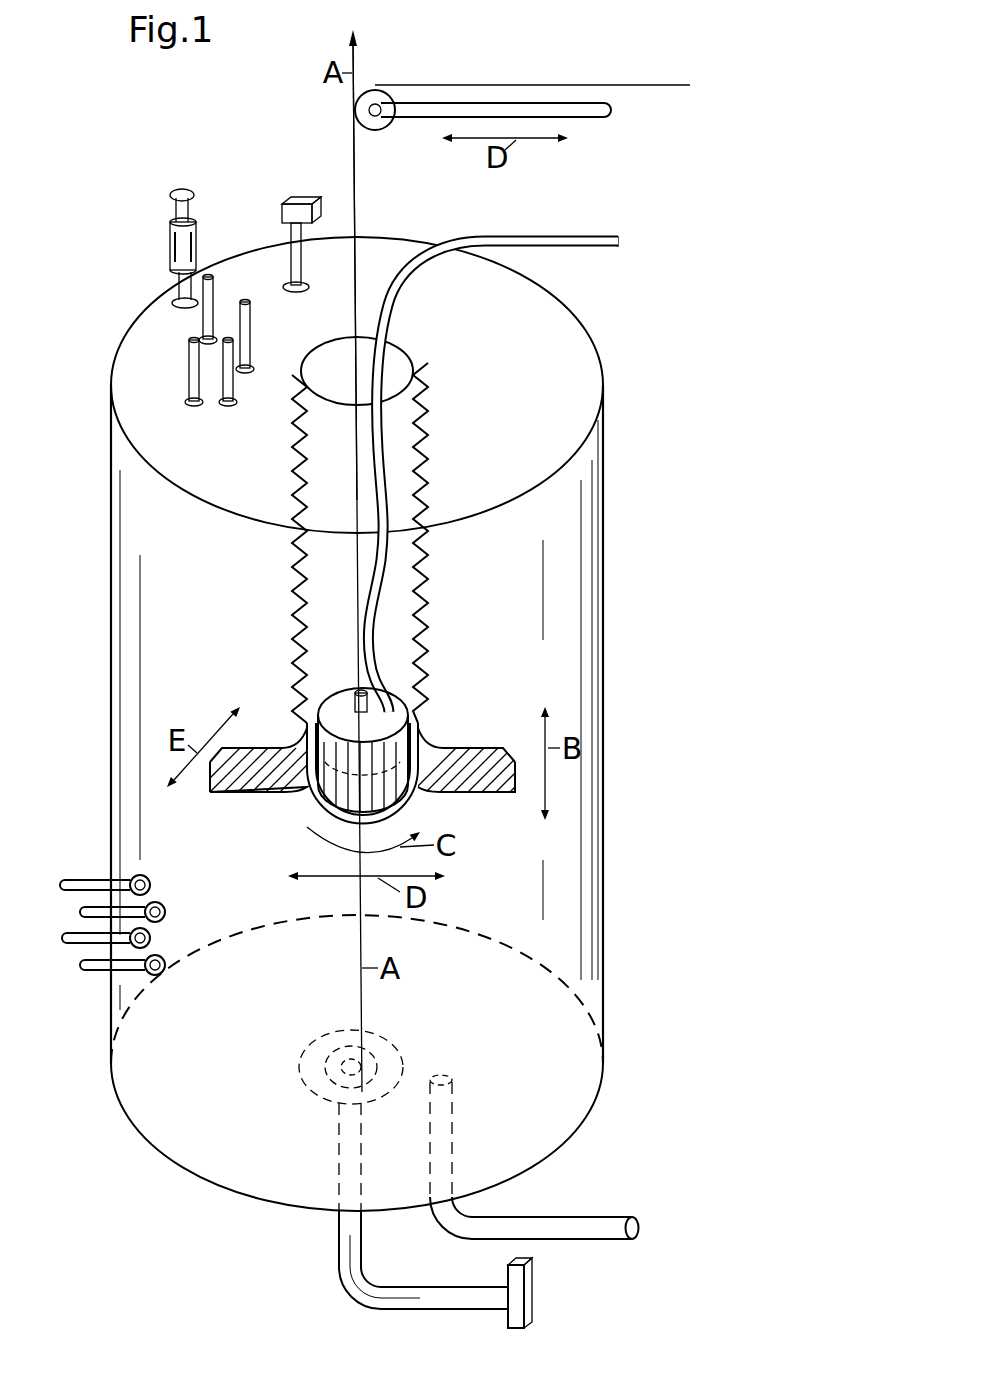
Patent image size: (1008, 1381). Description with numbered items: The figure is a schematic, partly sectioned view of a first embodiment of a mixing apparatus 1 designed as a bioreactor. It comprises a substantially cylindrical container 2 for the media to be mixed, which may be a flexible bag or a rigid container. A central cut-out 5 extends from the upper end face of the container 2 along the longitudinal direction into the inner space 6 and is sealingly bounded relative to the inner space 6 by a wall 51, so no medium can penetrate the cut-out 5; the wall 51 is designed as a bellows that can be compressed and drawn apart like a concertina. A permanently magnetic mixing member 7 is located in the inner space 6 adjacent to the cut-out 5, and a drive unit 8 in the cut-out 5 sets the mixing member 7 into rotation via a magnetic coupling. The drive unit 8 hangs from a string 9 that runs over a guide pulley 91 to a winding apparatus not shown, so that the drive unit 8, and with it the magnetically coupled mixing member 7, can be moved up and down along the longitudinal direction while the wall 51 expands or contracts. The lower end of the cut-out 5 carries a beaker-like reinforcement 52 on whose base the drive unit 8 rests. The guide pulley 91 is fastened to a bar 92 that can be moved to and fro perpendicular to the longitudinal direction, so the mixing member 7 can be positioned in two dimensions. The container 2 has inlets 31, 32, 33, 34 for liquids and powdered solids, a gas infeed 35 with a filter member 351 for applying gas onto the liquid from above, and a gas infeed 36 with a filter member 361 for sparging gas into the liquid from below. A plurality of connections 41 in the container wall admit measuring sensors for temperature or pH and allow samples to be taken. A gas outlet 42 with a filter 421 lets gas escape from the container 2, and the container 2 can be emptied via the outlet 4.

The mixing apparatus 1 is at (126, 147).
The container 2 is at (102, 656).
The outlet 4 is at (600, 1218).
The central cut-out 5 is at (386, 365).
The inner space 6 is at (200, 648).
The mixing member 7 is at (470, 752).
The drive unit 8 is at (397, 720).
The string 9 is at (357, 207).
The inlet 31 is at (190, 386).
The inlet 32 is at (228, 407).
The inlet 33 is at (250, 347).
The inlet 34 is at (206, 318).
The gas infeed 35 is at (290, 234).
The filter member 351 is at (300, 199).
The gas infeed 36 is at (425, 1302).
The filter member 361 is at (528, 1288).
The connections 41 is at (75, 880).
The gas outlet 42 is at (162, 245).
The filter 421 is at (193, 235).
The wall 51 is at (428, 468).
The beaker-like reinforcement 52 is at (305, 797).
The guide pulley 91 is at (376, 97).
The bar 92 is at (600, 106).